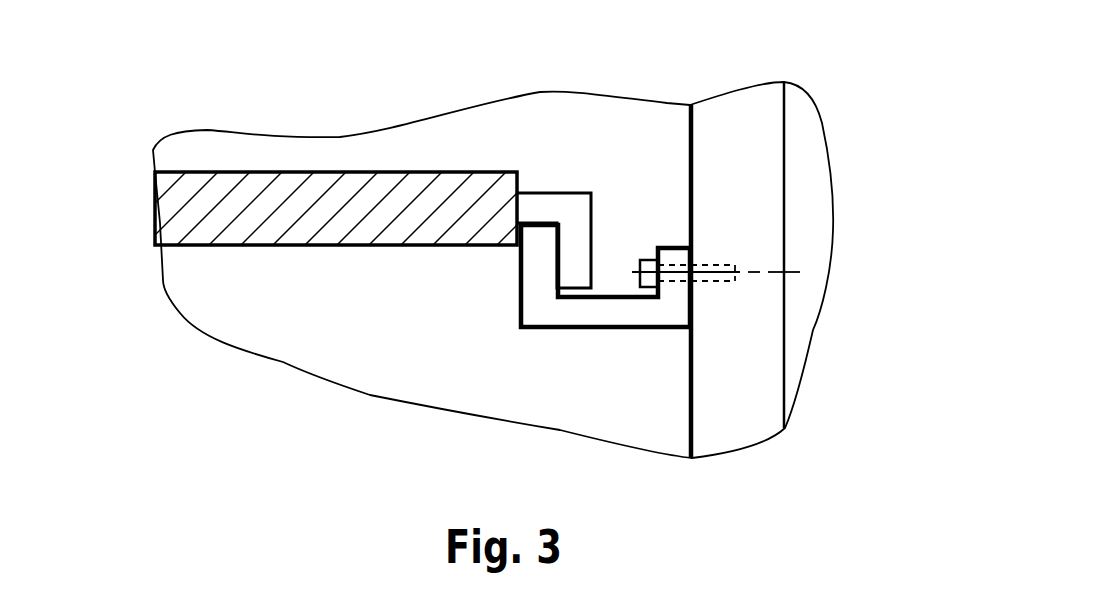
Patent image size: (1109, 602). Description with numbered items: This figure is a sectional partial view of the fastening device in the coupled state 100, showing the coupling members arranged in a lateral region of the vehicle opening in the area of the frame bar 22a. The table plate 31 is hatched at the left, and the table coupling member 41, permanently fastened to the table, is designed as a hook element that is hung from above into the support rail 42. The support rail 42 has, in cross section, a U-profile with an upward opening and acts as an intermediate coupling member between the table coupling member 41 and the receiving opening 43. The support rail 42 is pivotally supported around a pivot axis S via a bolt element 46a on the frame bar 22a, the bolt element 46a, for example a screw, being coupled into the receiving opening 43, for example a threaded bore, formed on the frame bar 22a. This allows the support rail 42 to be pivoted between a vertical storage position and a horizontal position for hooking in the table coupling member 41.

The coupled state 100 is at (316, 333).
The table plate 31 is at (278, 203).
The table coupling member 41 is at (548, 205).
The support rail 42 is at (537, 303).
The receiving opening 43 is at (714, 227).
The bolt element 46a is at (722, 270).
The pivot axis S is at (756, 273).
The frame bar 22a is at (747, 177).